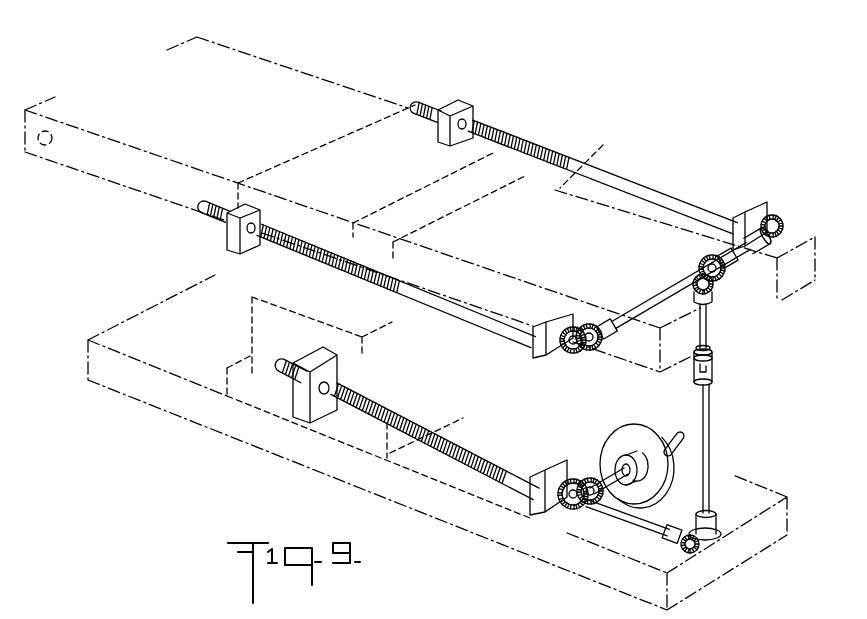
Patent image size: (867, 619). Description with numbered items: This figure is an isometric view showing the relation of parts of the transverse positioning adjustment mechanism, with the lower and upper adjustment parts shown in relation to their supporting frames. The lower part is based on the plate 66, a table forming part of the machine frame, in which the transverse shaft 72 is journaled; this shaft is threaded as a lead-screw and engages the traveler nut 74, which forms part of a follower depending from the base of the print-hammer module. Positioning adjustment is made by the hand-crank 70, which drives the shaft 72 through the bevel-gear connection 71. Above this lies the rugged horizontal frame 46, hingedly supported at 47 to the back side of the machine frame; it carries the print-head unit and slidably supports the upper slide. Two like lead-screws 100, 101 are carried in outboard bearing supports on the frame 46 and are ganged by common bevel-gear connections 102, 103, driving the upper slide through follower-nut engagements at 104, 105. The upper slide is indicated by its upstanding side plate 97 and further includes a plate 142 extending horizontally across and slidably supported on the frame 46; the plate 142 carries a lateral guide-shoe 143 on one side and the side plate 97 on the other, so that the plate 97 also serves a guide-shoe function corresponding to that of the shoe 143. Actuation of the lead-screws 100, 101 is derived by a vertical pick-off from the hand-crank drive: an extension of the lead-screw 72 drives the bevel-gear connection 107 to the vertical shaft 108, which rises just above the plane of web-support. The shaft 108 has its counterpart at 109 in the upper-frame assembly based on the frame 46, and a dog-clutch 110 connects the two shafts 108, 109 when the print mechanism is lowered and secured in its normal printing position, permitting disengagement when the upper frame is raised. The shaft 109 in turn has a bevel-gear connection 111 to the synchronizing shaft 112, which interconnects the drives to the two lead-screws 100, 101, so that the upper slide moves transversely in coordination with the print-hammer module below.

The horizontal frame 46 is at (84, 176).
The hinge support 47 is at (47, 130).
The plate 66 is at (438, 520).
The hand-crank 70 is at (672, 446).
The bevel-gear connection 71 is at (583, 474).
The transverse shaft 72 is at (418, 418).
The traveler nut 74 is at (340, 380).
The slide 97 is at (388, 260).
The lead-screw 100 is at (640, 172).
The lead-screw 101 is at (478, 305).
The bevel-gear connection 102 is at (780, 217).
The bevel-gear connection 103 is at (577, 350).
The follower-nut engagement 104 is at (467, 100).
The follower-nut engagement 105 is at (230, 250).
The bevel-gear connection 107 is at (718, 540).
The vertical shaft 108 is at (708, 447).
The shaft 109 is at (708, 326).
The dog-clutch 110 is at (713, 366).
The bevel-gear connection 111 is at (702, 269).
The synchronizing shaft 112 is at (643, 310).
The plate 142 is at (327, 151).
The lateral guide-shoe 143 is at (590, 153).